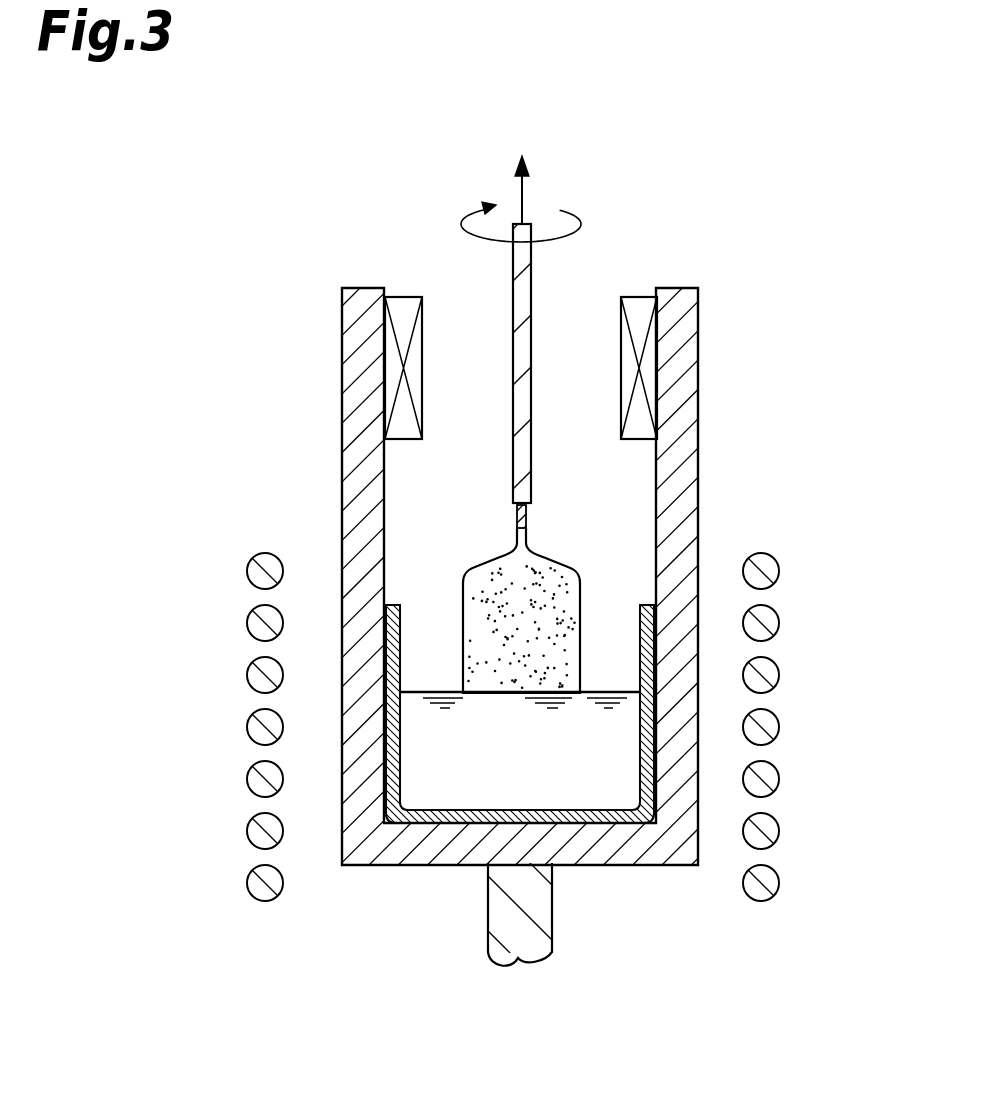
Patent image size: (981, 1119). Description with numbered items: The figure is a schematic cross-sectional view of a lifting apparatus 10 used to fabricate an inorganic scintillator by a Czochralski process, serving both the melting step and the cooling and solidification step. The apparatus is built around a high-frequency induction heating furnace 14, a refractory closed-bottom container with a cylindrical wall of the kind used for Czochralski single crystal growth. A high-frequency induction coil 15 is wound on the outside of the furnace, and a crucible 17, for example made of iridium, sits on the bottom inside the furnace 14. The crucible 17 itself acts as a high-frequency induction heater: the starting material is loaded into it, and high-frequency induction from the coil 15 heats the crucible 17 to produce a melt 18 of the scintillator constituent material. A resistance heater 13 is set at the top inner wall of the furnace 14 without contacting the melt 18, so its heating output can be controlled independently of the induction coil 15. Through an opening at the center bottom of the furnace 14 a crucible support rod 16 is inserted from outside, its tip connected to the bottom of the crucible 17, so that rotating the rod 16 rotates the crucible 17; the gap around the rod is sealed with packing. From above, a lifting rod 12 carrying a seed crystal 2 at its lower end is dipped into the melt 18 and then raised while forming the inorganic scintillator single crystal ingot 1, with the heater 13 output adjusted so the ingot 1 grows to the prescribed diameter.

The inorganic scintillator single crystal ingot 1 is at (472, 580).
The seed crystal 2 is at (517, 520).
The lifting apparatus 10 is at (818, 121).
The lifting rod 12 is at (532, 287).
The heater 13 is at (403, 294).
The high-frequency induction heating furnace 14 is at (702, 422).
The high-frequency induction coil 15 is at (768, 566).
The crucible support rod 16 is at (553, 900).
The crucible 17 is at (420, 827).
The melt 18 is at (613, 787).